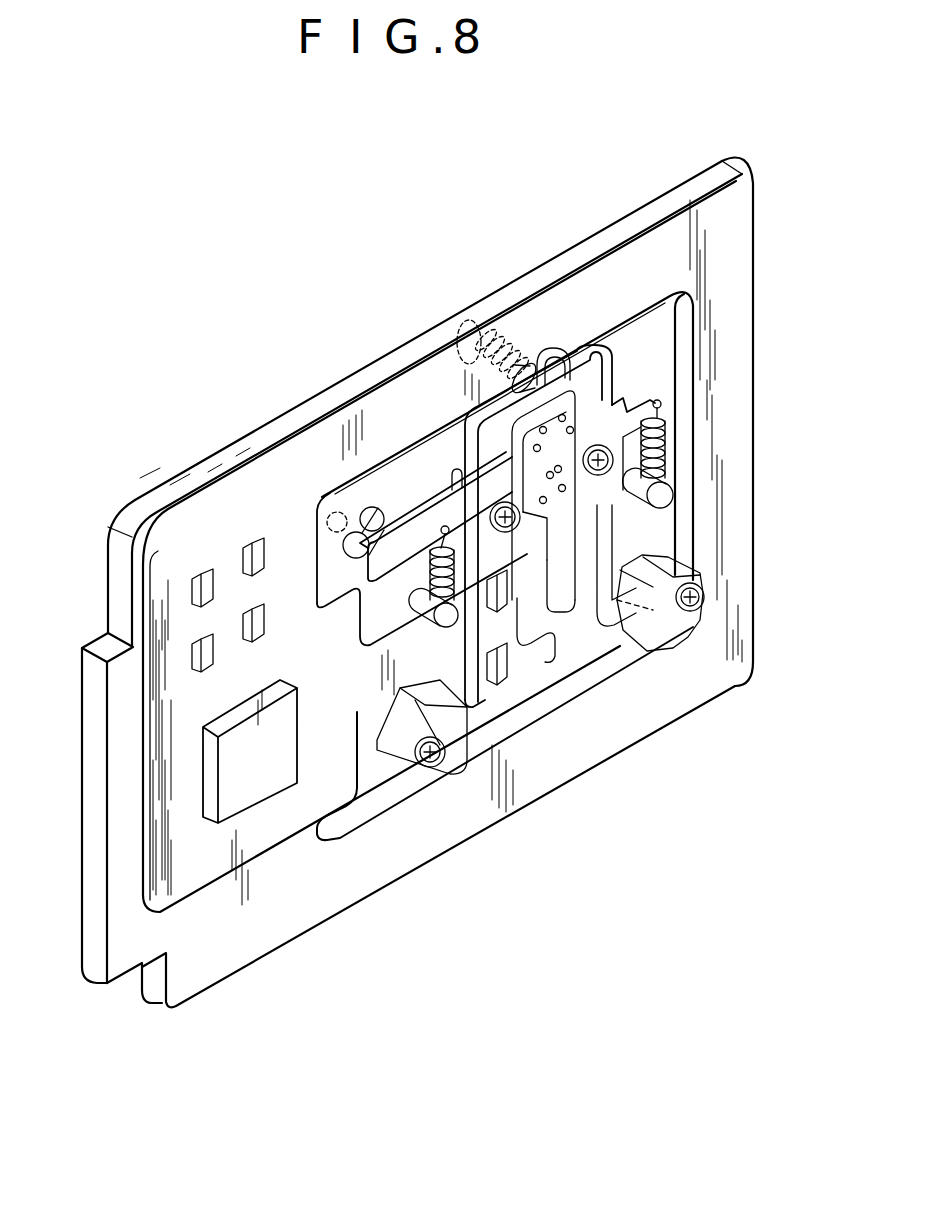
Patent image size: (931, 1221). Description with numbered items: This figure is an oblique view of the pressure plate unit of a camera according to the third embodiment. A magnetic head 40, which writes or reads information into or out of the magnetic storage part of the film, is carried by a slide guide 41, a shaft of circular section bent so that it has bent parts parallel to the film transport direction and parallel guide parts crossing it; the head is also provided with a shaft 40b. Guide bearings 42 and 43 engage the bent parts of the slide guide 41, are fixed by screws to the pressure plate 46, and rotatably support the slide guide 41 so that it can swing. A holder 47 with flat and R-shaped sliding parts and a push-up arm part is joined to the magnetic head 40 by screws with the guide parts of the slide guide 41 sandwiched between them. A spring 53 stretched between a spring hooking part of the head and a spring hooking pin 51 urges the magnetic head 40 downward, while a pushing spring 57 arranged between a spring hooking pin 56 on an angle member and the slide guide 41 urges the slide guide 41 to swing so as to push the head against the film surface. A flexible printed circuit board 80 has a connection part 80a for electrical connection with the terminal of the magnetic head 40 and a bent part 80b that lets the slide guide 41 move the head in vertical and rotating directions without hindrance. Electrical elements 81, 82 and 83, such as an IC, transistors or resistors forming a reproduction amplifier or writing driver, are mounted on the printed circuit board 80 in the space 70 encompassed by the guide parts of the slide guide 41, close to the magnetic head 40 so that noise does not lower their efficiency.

The magnetic head 40 is at (573, 378).
The shaft 40b is at (352, 530).
The slide guide 41 is at (427, 435).
The guide bearing 42 is at (447, 760).
The guide bearing 43 is at (660, 590).
The pressure plate 46 is at (620, 274).
The holder 47 is at (482, 462).
The spring hooking pin 51 is at (672, 495).
The spring 53 is at (657, 432).
The spring hooking pin 56 is at (462, 320).
The pushing spring 57 is at (542, 382).
The space 70 is at (582, 570).
The flexible printed circuit board 80 is at (277, 823).
The connection part 80a is at (560, 505).
The bent part 80b is at (557, 607).
The electrical element 81 is at (503, 683).
The electrical element 82 is at (500, 613).
The electrical element 83 is at (235, 790).